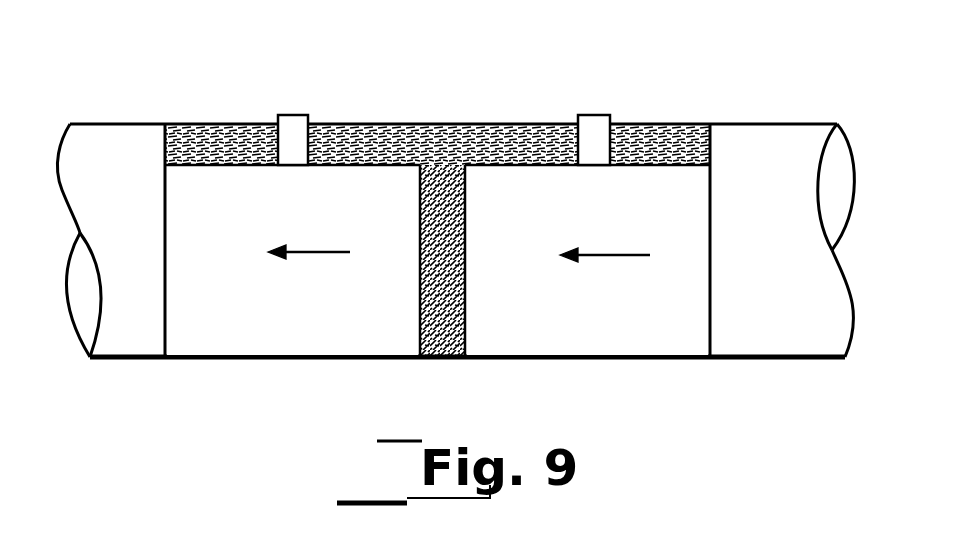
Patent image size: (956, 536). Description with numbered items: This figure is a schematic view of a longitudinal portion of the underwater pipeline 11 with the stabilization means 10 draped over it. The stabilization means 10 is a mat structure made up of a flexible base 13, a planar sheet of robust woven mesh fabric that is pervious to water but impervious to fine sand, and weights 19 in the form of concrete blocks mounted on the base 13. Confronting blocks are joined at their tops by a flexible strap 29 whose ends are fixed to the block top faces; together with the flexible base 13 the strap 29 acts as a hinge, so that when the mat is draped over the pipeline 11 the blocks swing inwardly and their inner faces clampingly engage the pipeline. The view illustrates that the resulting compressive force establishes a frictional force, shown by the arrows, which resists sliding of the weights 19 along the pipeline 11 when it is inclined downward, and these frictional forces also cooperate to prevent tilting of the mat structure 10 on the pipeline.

The stabilization means 10 is at (513, 124).
The underwater pipeline 11 is at (777, 147).
The flexible base 13 is at (407, 124).
The weights 19 is at (268, 325).
The flexible strap 29 is at (292, 118).